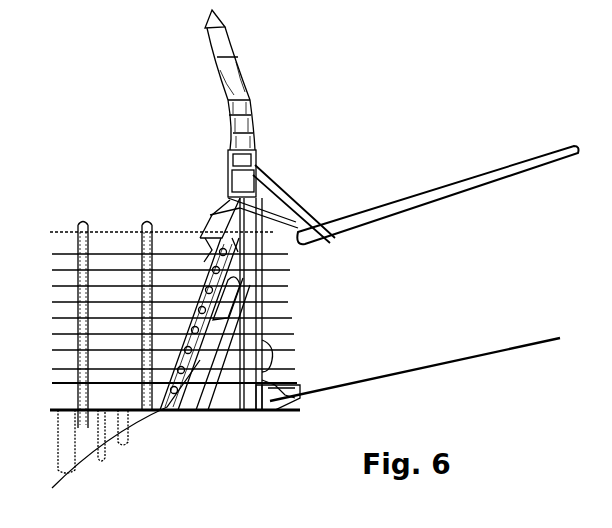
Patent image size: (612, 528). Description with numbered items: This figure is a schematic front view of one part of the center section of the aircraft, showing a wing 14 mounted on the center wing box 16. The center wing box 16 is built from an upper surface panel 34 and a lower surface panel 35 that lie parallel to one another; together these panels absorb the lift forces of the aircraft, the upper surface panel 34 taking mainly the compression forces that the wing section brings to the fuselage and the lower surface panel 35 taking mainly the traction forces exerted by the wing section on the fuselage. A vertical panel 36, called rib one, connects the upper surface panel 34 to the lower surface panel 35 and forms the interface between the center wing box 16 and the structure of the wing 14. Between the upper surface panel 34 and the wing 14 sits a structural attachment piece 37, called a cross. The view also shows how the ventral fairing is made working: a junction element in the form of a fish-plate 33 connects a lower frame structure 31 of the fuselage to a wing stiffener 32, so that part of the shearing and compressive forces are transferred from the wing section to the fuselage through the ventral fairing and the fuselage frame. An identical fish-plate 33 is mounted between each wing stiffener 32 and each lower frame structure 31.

The wing 14 is at (440, 316).
The center wing box 16 is at (232, 428).
The lower frame structure 31 is at (256, 95).
The wing stiffener 32 is at (400, 212).
The fish-plate 33 is at (292, 208).
The upper surface panel 34 is at (108, 232).
The lower surface panel 35 is at (173, 412).
The vertical panel 36 is at (264, 300).
The structural attachment piece 37 is at (222, 210).